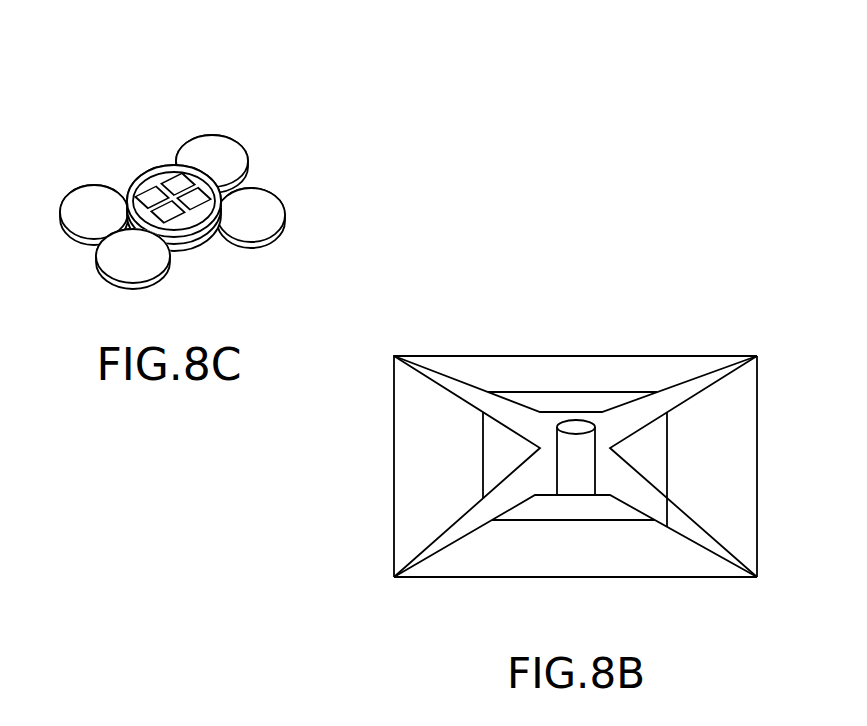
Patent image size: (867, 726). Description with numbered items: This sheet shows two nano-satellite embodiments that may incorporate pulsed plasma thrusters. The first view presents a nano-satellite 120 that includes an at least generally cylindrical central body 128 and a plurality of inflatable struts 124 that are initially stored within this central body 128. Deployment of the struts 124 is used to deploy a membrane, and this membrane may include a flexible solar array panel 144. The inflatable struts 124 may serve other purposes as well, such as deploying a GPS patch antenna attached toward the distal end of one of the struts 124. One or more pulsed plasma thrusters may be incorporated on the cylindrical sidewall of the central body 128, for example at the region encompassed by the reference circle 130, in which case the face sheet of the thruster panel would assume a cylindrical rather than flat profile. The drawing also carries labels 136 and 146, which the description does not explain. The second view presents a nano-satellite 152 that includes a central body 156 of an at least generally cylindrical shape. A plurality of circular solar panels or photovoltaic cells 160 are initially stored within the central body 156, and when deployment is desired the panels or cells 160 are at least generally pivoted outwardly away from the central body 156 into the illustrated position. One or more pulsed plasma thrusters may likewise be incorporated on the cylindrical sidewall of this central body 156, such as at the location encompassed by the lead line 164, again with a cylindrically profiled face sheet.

In FIG. 8B, the nano-satellite 120 is at (602, 332).
In FIG. 8B, the inflatable struts 124 is at (468, 383).
In FIG. 8B, the central body 128 is at (627, 356).
In FIG. 8B, the reference circle 130 is at (557, 356).
In FIG. 8B, the bottom edge 136 is at (747, 578).
In FIG. 8B, the flexible solar array panel 144 is at (667, 467).
In FIG. 8B, the side wall 146 is at (758, 404).
In FIG. 8C, the nano-satellite 152 is at (127, 145).
In FIG. 8C, the central body 156 is at (207, 247).
In FIG. 8C, the circular solar panels or photovoltaic cells 160 is at (62, 206).
In FIG. 8C, the lead line 164 is at (188, 262).